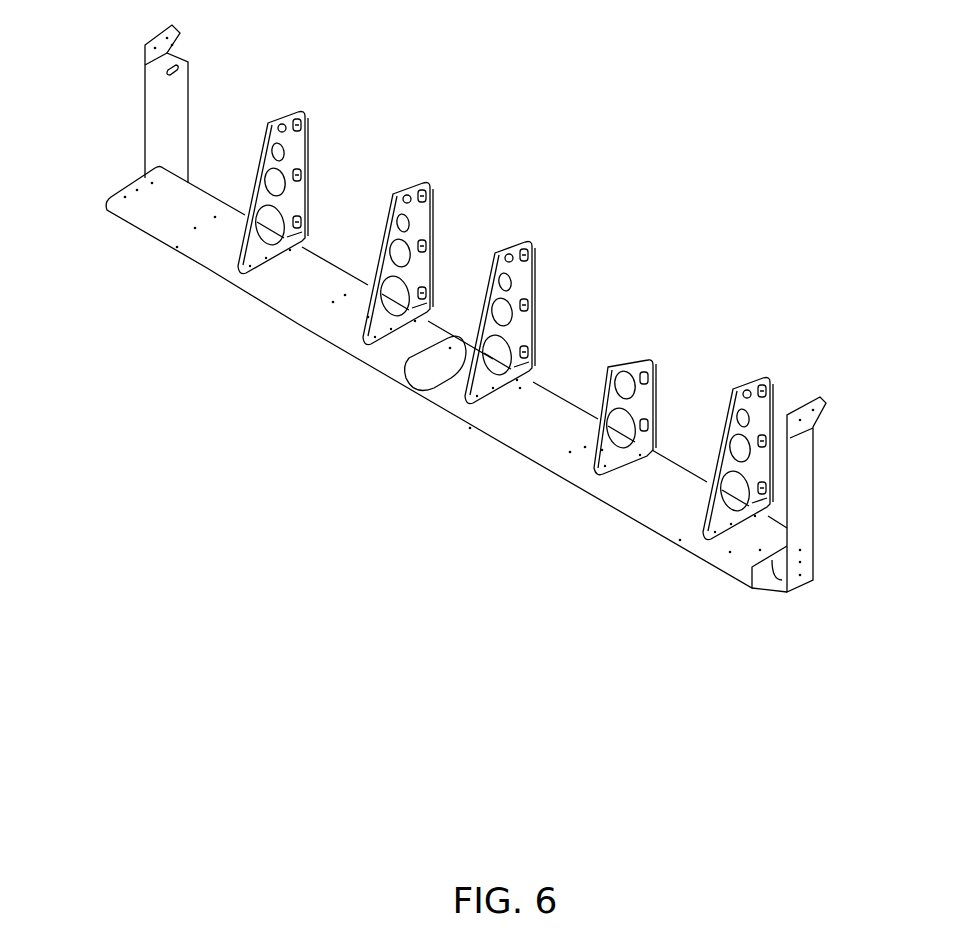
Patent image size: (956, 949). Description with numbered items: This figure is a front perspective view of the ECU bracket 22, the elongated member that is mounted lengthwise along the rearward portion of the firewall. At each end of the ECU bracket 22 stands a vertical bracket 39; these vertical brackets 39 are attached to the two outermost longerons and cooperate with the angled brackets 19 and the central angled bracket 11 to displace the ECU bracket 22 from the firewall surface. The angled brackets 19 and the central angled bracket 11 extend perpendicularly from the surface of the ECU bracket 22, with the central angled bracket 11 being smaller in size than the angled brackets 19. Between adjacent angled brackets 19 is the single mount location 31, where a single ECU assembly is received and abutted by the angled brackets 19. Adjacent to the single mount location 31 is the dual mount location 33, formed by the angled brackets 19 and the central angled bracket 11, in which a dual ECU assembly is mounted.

The central angled bracket 11 is at (642, 362).
The angled brackets 19 is at (300, 110).
The ECU bracket 22 is at (412, 387).
The single mount location 31 is at (231, 331).
The dual mount location 33 is at (598, 507).
The vertical brackets 39 is at (145, 112).